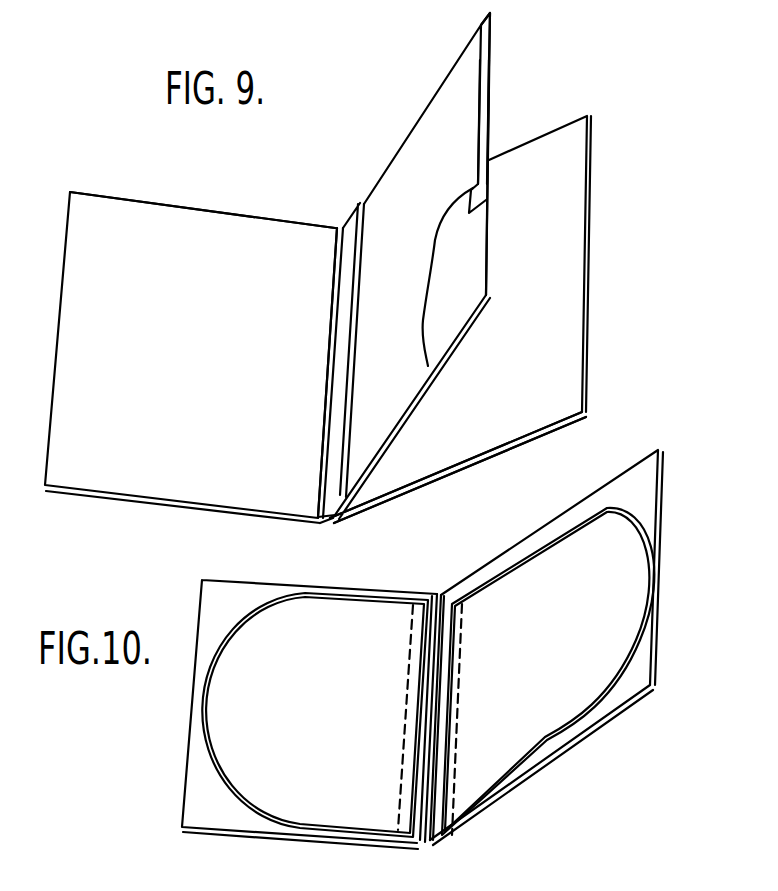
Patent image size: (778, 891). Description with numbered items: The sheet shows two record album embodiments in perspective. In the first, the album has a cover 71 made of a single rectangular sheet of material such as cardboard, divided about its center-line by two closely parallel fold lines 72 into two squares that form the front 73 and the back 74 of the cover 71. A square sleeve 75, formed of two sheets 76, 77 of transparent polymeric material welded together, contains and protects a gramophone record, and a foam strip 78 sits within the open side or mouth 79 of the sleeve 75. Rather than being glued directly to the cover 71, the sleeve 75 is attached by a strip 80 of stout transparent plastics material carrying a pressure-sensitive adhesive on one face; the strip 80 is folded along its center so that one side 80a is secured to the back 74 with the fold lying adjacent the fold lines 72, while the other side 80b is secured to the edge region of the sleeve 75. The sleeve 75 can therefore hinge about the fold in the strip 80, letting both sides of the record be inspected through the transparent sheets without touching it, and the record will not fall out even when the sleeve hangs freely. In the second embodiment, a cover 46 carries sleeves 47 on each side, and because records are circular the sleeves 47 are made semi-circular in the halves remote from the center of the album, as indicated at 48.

In FIG. 9, the cover 71 is at (206, 209).
In FIG. 9, the fold lines 72 is at (338, 349).
In FIG. 9, the front 73 is at (70, 296).
In FIG. 9, the back 74 is at (560, 408).
In FIG. 9, the sleeve 75 is at (454, 68).
In FIG. 9, the sheet 76 is at (470, 95).
In FIG. 9, the sheet 77 is at (470, 261).
In FIG. 9, the foam strip 78 is at (487, 128).
In FIG. 9, the mouth 79 is at (494, 52).
In FIG. 9, the strip 80 is at (347, 277).
In FIG. 9, the side of strip 80a is at (342, 492).
In FIG. 9, the side of strip 80b is at (340, 432).
In FIG. 10, the cover 46 is at (416, 592).
In FIG. 10, the sleeves 47 is at (347, 608).
In FIG. 10, the semi-circular portion 48 is at (196, 722).